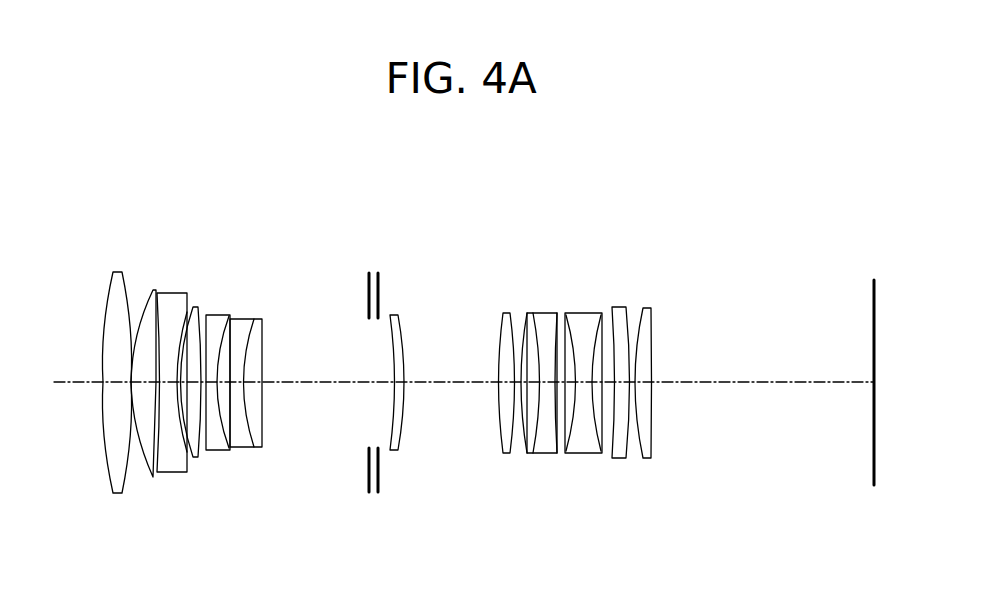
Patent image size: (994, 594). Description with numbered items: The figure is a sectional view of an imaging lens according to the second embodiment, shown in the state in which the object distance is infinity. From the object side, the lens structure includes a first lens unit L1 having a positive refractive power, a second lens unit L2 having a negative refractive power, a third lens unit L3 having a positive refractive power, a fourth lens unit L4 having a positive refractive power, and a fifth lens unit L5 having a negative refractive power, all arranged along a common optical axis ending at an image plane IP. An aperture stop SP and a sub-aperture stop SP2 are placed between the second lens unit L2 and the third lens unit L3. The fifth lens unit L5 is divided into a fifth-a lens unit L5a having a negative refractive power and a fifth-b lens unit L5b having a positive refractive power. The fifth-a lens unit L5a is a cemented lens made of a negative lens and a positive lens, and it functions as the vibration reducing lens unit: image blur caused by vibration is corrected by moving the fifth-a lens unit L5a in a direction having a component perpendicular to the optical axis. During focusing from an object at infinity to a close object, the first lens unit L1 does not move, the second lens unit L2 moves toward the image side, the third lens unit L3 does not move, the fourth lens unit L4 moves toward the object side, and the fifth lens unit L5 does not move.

The first lens unit L1 is at (100, 263).
The second lens unit L2 is at (206, 263).
The third lens unit L3 is at (362, 263).
The fourth lens unit L4 is at (486, 263).
The fifth lens unit L5 is at (563, 193).
The fifth-a lens unit L5a is at (563, 263).
The fifth-b lens unit L5b is at (609, 263).
The aperture stop SP is at (368, 283).
The sub-aperture stop SP2 is at (378, 283).
The image plane IP is at (875, 306).